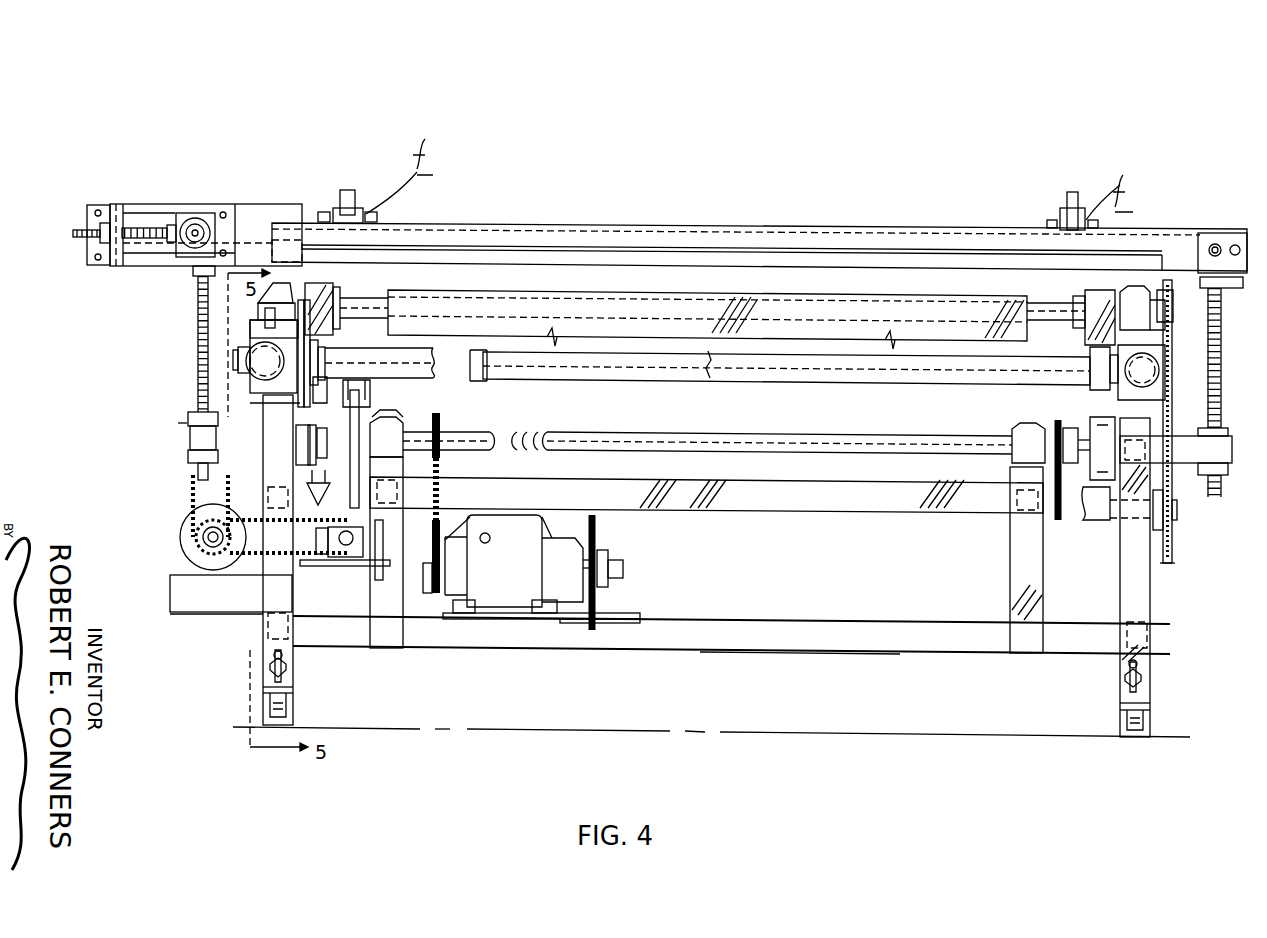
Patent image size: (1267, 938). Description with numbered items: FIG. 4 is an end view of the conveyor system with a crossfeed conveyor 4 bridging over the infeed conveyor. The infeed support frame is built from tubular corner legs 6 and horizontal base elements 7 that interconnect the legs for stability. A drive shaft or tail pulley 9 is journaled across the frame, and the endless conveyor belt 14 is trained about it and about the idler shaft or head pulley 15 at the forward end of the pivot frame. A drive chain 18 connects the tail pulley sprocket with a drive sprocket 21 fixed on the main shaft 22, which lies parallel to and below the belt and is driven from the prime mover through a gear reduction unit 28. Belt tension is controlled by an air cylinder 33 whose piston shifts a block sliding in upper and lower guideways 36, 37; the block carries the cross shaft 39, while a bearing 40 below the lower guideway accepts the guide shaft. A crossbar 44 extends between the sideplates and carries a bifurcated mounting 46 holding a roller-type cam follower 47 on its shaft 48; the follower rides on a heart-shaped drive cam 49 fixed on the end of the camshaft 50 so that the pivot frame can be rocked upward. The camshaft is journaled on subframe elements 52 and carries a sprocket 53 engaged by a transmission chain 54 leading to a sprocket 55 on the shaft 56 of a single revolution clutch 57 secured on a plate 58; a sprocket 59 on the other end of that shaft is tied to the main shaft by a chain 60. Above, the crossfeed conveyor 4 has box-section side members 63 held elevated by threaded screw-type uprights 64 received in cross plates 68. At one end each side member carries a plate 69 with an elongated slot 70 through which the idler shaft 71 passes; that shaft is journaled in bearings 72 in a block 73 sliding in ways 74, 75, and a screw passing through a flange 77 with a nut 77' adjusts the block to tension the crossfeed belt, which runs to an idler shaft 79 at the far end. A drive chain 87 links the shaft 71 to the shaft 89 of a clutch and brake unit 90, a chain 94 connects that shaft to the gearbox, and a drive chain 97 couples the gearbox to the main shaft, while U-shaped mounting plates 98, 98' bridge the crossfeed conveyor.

The crossfeed conveyor 4 is at (701, 227).
The corner legs 6 is at (1150, 612).
The horizontal base elements 7 is at (683, 655).
The drive shaft 9 is at (1180, 318).
The endless conveyor belt 14 is at (630, 293).
The idler shaft 15 is at (285, 300).
The drive chain 18 is at (1172, 415).
The drive sprocket 21 is at (1172, 558).
The main shaft 22 is at (1177, 510).
The gear reduction unit 28 is at (385, 557).
The air cylinder 33 is at (298, 373).
The upper guideway 36 is at (270, 310).
The lower guideway 37 is at (300, 392).
The cross shaft 39 is at (245, 360).
The bearing 40 is at (502, 362).
The crossbar 44 is at (290, 415).
The bifurcated mounting 46 is at (341, 402).
The roller-type cam follower 47 is at (330, 440).
The shaft 48 is at (345, 415).
The drive cam 49 is at (320, 484).
The camshaft 50 is at (365, 448).
The subframe elements 52 is at (1043, 590).
The sprocket 53 is at (441, 428).
The transmission chain 54 is at (437, 595).
The sprocket 55 is at (491, 608).
The shaft 56 is at (441, 545).
The single revolution clutch 57 is at (522, 620).
The plate 58 is at (553, 613).
The sprocket 59 is at (624, 623).
The chain 60 is at (597, 630).
The side members 63 is at (737, 233).
The threaded screw-type uprights 64 is at (197, 337).
The cross plates 68 is at (140, 268).
The plate 69 is at (303, 208).
The elongated slot 70 is at (152, 218).
The idler shaft 71 is at (194, 230).
The bearings 72 is at (197, 228).
The block 73 is at (185, 225).
The way 74 is at (132, 218).
The way 75 is at (128, 270).
The flange 77 is at (56, 228).
The nut 77' is at (63, 204).
The idler shaft 79 is at (1216, 243).
The drive chain 87 is at (305, 472).
The shaft 89 is at (220, 577).
The clutch and brake unit 90 is at (208, 538).
The chain 94 is at (335, 516).
The drive chain 97 is at (382, 600).
The U-shaped mounting plate 98 is at (1112, 169).
The U-shaped mounting plate 98' is at (387, 154).